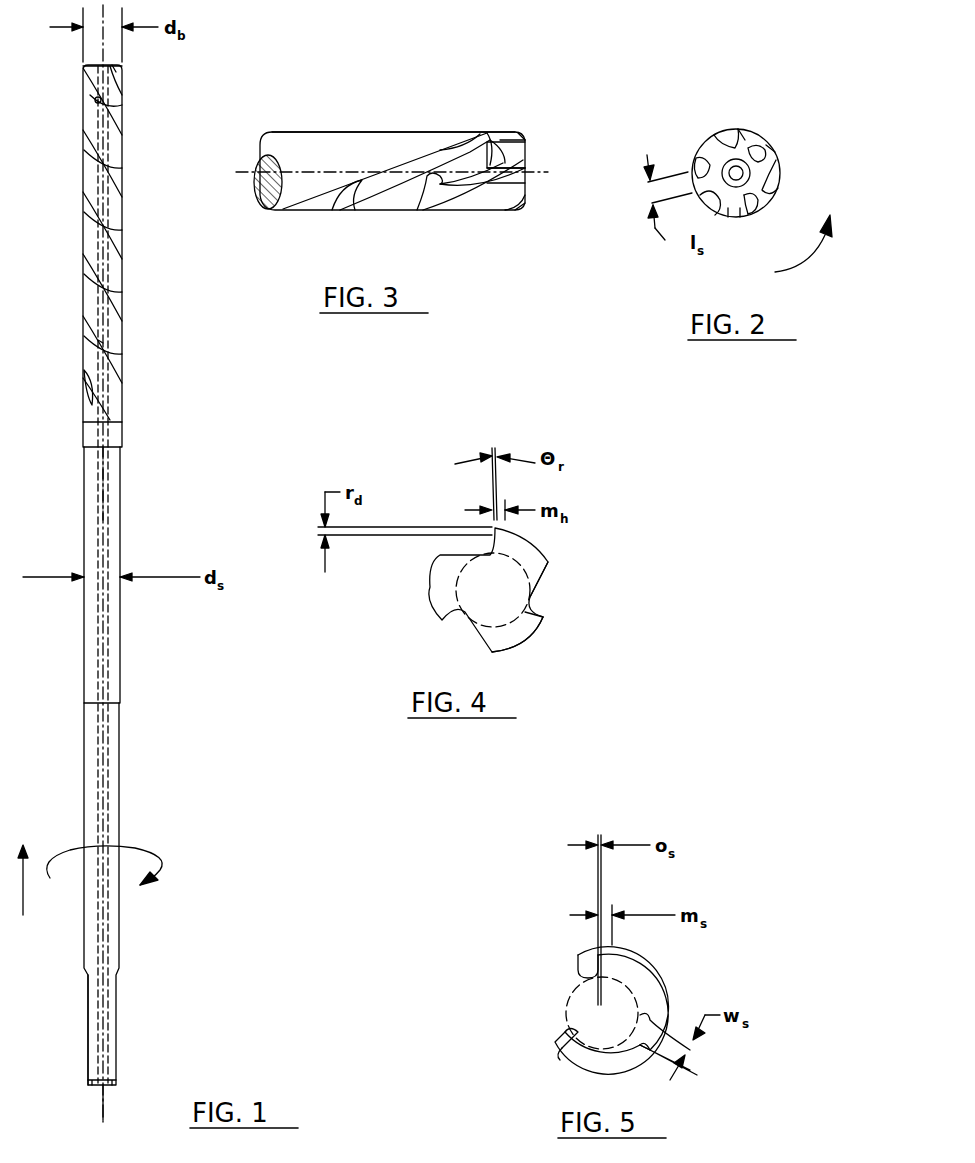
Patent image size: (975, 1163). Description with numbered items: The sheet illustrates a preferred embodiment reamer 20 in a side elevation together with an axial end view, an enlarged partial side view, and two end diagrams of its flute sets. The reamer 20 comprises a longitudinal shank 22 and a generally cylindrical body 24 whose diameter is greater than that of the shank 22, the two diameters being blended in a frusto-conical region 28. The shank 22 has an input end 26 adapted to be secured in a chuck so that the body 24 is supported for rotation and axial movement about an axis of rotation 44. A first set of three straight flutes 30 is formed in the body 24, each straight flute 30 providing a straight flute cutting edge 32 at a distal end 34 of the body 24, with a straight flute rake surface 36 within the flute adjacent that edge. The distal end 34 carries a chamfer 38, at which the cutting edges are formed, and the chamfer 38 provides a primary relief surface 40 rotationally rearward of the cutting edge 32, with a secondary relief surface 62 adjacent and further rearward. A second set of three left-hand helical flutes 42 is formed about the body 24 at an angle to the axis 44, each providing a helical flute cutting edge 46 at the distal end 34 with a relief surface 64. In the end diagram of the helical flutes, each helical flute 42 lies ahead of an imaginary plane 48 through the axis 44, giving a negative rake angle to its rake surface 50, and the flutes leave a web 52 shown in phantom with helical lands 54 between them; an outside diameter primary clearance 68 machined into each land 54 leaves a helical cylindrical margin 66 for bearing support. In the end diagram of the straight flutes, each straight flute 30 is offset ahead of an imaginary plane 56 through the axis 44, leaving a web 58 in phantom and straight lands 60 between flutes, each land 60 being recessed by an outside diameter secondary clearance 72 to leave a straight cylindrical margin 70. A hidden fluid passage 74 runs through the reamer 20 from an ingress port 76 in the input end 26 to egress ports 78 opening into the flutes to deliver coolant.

In FIG. 3, the reamer 20 is at (392, 72).
In FIG. 2, the reamer 20 is at (752, 92).
In FIG. 1, the longitudinal shank 22 is at (84, 655).
In FIG. 1, the body 24 is at (83, 138).
In FIG. 3, the body 24 is at (312, 120).
In FIG. 2, the body 24 is at (788, 160).
In FIG. 4, the body 24 is at (630, 528).
In FIG. 5, the body 24 is at (735, 880).
In FIG. 1, the input end 26 is at (88, 1003).
In FIG. 1, the frusto-conical region 28 is at (83, 428).
In FIG. 1, the straight flute 30 is at (88, 66).
In FIG. 3, the straight flute 30 is at (435, 193).
In FIG. 2, the straight flute 30 is at (758, 150).
In FIG. 5, the straight flute 30 is at (560, 1060).
In FIG. 3, the straight flute cutting edge 32 is at (525, 178).
In FIG. 2, the straight flute cutting edge 32 is at (770, 145).
In FIG. 5, the straight flute cutting edge 32 is at (588, 955).
In FIG. 1, the distal end 34 is at (122, 60).
In FIG. 3, the distal end 34 is at (535, 155).
In FIG. 2, the distal end 34 is at (705, 158).
In FIG. 3, the straight flute rake surface 36 is at (505, 185).
In FIG. 2, the straight flute rake surface 36 is at (755, 215).
In FIG. 5, the straight flute rake surface 36 is at (560, 1040).
In FIG. 3, the chamfer 38 is at (522, 213).
In FIG. 3, the primary relief surface 40 is at (525, 165).
In FIG. 2, the primary relief surface 40 is at (742, 217).
In FIG. 1, the helical flute 42 is at (88, 200).
In FIG. 3, the helical flute 42 is at (340, 208).
In FIG. 2, the helical flute 42 is at (712, 135).
In FIG. 4, the helical flute 42 is at (540, 580).
In FIG. 1, the axis of rotation 44 is at (103, 1108).
In FIG. 3, the axis of rotation 44 is at (243, 168).
In FIG. 3, the helical flute cutting edge 46 is at (512, 140).
In FIG. 2, the helical flute cutting edge 46 is at (736, 130).
In FIG. 4, the imaginary plane 48 is at (520, 482).
In FIG. 2, the rake surface 50 is at (776, 180).
In FIG. 4, the rake surface 50 is at (552, 615).
In FIG. 4, the web 52 is at (460, 625).
In FIG. 4, the helical land 54 is at (530, 658).
In FIG. 5, the imaginary plane 56 is at (625, 885).
In FIG. 5, the web 58 is at (560, 978).
In FIG. 5, the straight land 60 is at (680, 975).
In FIG. 3, the secondary relief surface 62 is at (525, 145).
In FIG. 2, the secondary relief surface 62 is at (730, 216).
In FIG. 3, the relief surface 64 is at (525, 205).
In FIG. 2, the relief surface 64 is at (760, 208).
In FIG. 3, the helical cylindrical margin 66 is at (445, 148).
In FIG. 3, the outside diameter primary clearance 68 is at (362, 138).
In FIG. 3, the straight cylindrical margin 70 is at (487, 140).
In FIG. 3, the outside diameter secondary clearance 72 is at (495, 155).
In FIG. 1, the fluid passage 74 is at (105, 497).
In FIG. 1, the ingress port 76 is at (98, 1085).
In FIG. 1, the egress port 78 is at (95, 100).